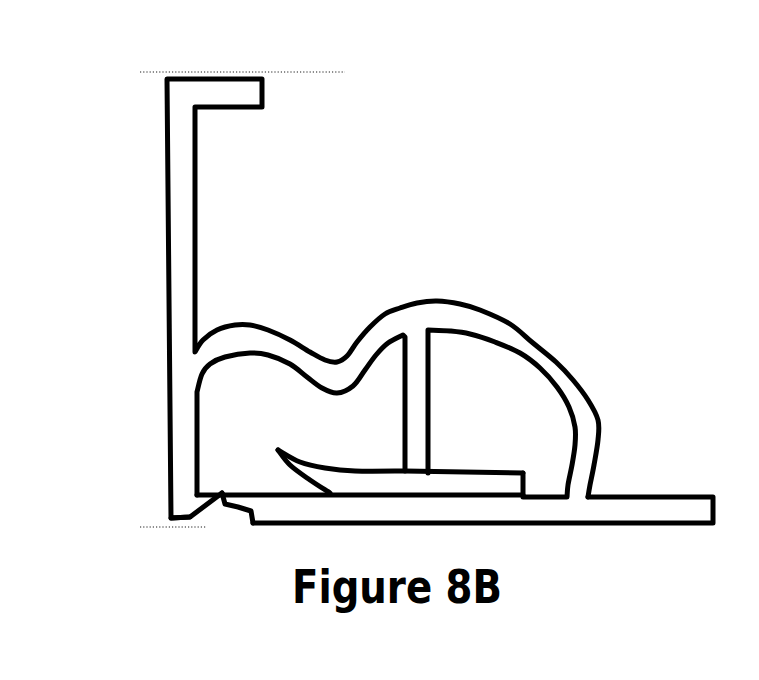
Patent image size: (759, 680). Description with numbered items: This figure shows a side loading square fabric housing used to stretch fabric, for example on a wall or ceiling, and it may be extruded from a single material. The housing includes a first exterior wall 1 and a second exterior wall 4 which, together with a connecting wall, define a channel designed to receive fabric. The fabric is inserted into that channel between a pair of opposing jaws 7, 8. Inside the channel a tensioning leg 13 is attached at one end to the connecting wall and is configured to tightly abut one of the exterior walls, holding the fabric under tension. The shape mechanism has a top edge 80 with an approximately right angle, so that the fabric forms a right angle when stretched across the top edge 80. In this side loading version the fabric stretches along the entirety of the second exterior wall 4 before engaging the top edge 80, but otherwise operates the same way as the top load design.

The first exterior wall 1 is at (497, 520).
The second exterior wall 4 is at (184, 273).
The jaw 7 is at (238, 513).
The jaw 8 is at (203, 503).
The tensioning leg 13 is at (477, 478).
The top edge 80 is at (163, 75).